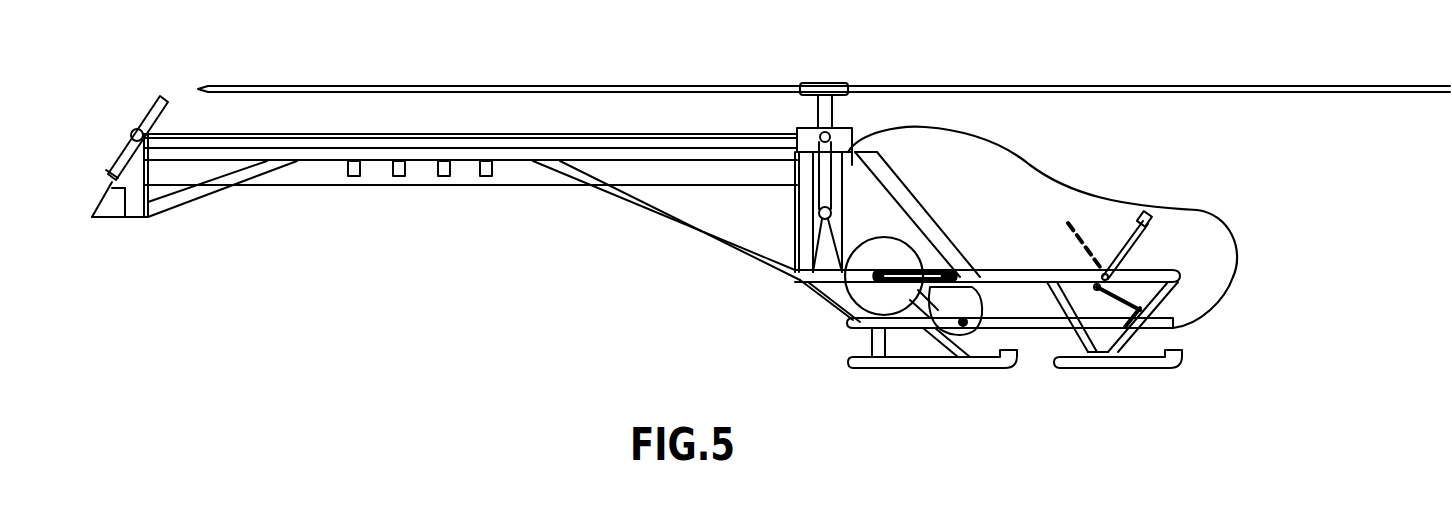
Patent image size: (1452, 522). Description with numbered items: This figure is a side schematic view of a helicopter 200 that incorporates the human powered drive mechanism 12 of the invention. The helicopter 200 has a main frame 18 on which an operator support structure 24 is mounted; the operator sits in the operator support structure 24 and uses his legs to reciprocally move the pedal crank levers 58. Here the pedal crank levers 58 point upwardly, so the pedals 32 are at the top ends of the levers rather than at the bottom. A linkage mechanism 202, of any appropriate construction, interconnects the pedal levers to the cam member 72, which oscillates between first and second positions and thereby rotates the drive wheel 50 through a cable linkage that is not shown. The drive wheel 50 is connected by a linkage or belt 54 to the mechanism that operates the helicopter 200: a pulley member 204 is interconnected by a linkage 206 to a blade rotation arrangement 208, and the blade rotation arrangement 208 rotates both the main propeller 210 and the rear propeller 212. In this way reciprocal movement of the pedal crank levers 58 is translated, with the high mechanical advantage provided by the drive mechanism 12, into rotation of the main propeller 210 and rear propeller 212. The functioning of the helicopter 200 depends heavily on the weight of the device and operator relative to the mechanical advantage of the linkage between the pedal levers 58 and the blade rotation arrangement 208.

The drive mechanism 12 is at (1147, 253).
The main frame 18 is at (1020, 270).
The operator support structure 24 is at (943, 223).
The pedals 32 is at (1147, 237).
The drive wheel 50 is at (862, 292).
The linkage or belt 54 is at (797, 277).
The pedal crank levers 58 is at (1130, 247).
The cam member 72 is at (953, 328).
The helicopter 200 is at (1024, 158).
The linkage mechanism 202 is at (1040, 328).
The pulley member 204 is at (819, 215).
The linkage 206 is at (812, 180).
The blade rotation arrangement 208 is at (847, 127).
The main propeller 210 is at (272, 86).
The rear propeller 212 is at (152, 108).